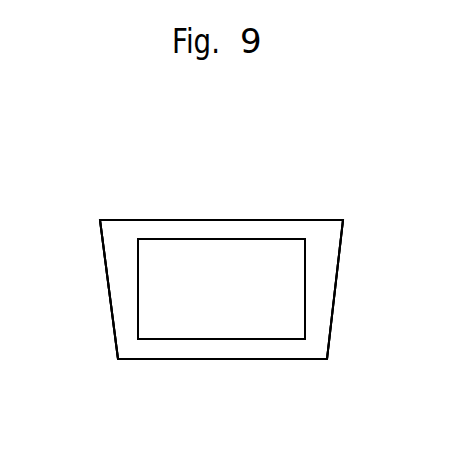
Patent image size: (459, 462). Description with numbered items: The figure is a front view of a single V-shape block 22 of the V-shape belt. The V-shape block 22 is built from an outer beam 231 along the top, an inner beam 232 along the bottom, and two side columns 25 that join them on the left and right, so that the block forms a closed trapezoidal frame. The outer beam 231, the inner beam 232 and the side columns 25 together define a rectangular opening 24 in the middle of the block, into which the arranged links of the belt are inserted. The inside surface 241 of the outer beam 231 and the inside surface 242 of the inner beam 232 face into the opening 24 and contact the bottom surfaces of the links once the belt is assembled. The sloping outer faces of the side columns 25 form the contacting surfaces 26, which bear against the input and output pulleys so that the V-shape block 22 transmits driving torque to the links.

The V-shape block 22 is at (227, 205).
The opening 24 is at (168, 328).
The inside surface of the outer beam 241 is at (173, 239).
The inside surface of the inner beam 242 is at (268, 338).
The outer beam 231 is at (250, 230).
The inner beam 232 is at (192, 352).
The side column 25 is at (117, 254).
The contacting surface 26 is at (112, 327).